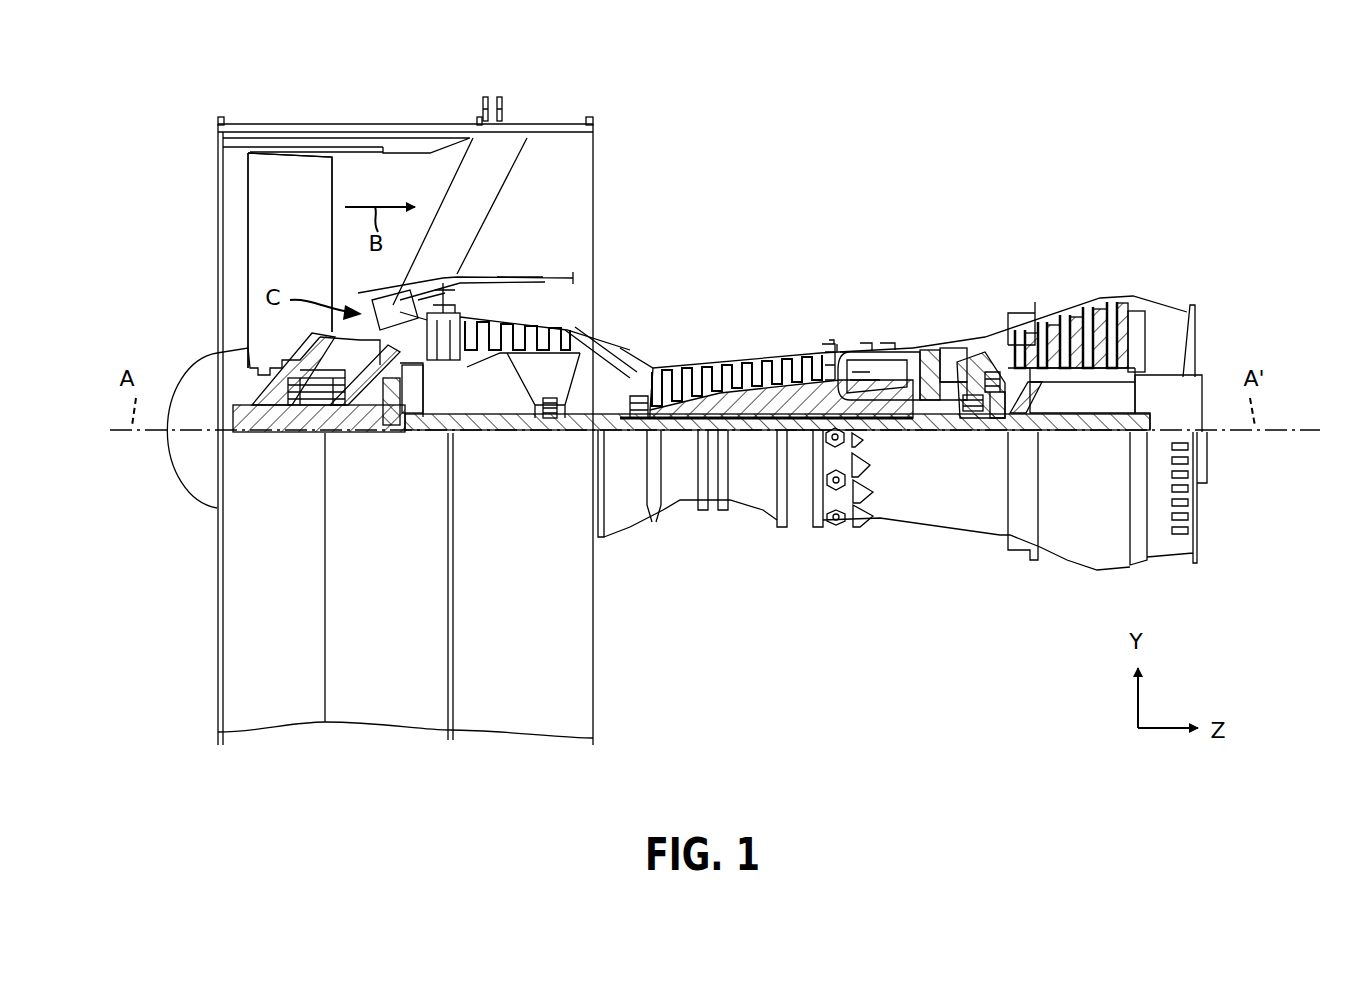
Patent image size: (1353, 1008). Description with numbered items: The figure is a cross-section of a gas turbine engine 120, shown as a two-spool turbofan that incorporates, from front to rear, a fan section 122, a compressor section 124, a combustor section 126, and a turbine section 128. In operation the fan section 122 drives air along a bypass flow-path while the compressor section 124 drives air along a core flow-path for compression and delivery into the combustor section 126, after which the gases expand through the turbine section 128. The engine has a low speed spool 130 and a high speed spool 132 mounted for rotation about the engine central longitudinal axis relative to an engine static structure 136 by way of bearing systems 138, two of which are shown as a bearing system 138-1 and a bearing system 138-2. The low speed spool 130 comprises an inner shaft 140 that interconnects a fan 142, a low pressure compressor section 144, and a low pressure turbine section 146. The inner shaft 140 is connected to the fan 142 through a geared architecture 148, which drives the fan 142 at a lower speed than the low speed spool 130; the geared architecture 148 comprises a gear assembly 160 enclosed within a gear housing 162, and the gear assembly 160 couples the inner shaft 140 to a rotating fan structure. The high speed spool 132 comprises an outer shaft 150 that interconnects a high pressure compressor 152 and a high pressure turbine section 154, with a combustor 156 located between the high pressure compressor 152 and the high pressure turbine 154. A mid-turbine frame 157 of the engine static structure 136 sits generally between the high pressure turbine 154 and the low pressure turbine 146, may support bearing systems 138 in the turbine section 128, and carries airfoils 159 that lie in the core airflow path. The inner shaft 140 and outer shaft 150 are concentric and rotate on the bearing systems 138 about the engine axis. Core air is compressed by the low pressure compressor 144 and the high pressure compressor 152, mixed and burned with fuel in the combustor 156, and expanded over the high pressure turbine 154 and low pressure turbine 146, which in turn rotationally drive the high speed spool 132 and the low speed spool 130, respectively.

The gas turbine engine 120 is at (714, 138).
The fan section 122 is at (450, 109).
The compressor section 124 is at (455, 236).
The combustor section 126 is at (820, 236).
The turbine section 128 is at (1135, 236).
The low speed spool 130 is at (760, 452).
The high speed spool 132 is at (797, 397).
The engine static structure 136 is at (800, 512).
The bearing system 138 is at (998, 430).
The bearing system 138-1 is at (305, 426).
The bearing system 138-2 is at (550, 432).
The inner shaft 140 is at (614, 432).
The fan 142 is at (290, 260).
The low pressure compressor section 144 is at (528, 331).
The low pressure turbine section 146 is at (1066, 320).
The geared architecture 148 is at (416, 450).
The outer shaft 150 is at (878, 418).
The high pressure compressor 152 is at (736, 387).
The high pressure turbine section 154 is at (942, 350).
The combustor 156 is at (870, 376).
The mid-turbine frame 157 is at (980, 368).
The airfoils 159 is at (985, 362).
The gear assembly 160 is at (414, 420).
The gear housing 162 is at (423, 376).